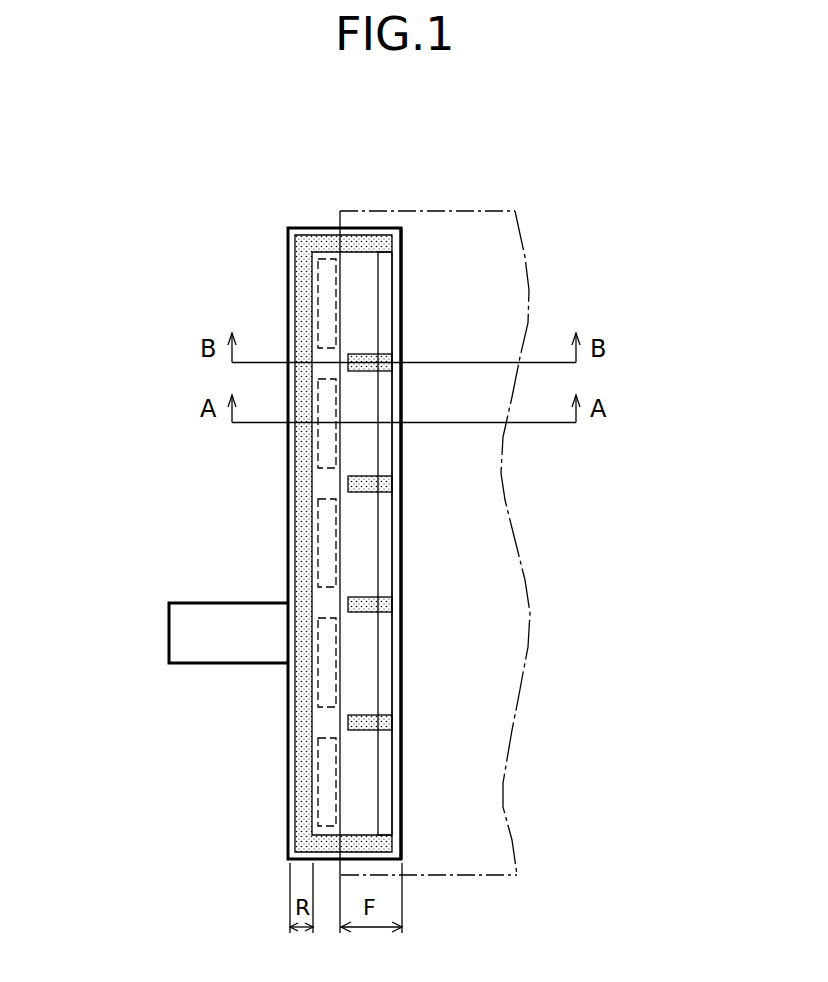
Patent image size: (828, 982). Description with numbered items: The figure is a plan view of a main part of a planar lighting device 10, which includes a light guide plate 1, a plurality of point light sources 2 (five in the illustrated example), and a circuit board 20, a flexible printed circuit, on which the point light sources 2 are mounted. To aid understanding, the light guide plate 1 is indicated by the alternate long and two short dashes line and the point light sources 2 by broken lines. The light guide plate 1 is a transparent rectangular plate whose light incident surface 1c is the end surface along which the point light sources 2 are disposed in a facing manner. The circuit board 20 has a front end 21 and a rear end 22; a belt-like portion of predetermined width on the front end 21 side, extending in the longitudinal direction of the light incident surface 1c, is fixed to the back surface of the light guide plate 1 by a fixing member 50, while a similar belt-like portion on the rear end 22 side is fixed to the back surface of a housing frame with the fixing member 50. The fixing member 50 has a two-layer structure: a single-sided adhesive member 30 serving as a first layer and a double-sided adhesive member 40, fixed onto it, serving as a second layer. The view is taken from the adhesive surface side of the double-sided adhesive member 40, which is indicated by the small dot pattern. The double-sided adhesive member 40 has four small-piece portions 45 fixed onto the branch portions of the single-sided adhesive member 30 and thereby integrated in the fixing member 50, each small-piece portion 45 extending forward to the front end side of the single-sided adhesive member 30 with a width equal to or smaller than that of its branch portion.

The planar lighting device 10 is at (102, 186).
The light guide plate 1 is at (497, 640).
The light incident surface 1c is at (340, 213).
The point light source 2 is at (327, 297).
The circuit board 20 is at (297, 226).
The front end 21 is at (403, 808).
The rear end 22 is at (288, 487).
The single-sided adhesive member 30 is at (385, 303).
The double-sided adhesive member 40 is at (300, 560).
The small-piece portion 45 is at (390, 720).
The fixing member 50 is at (296, 802).